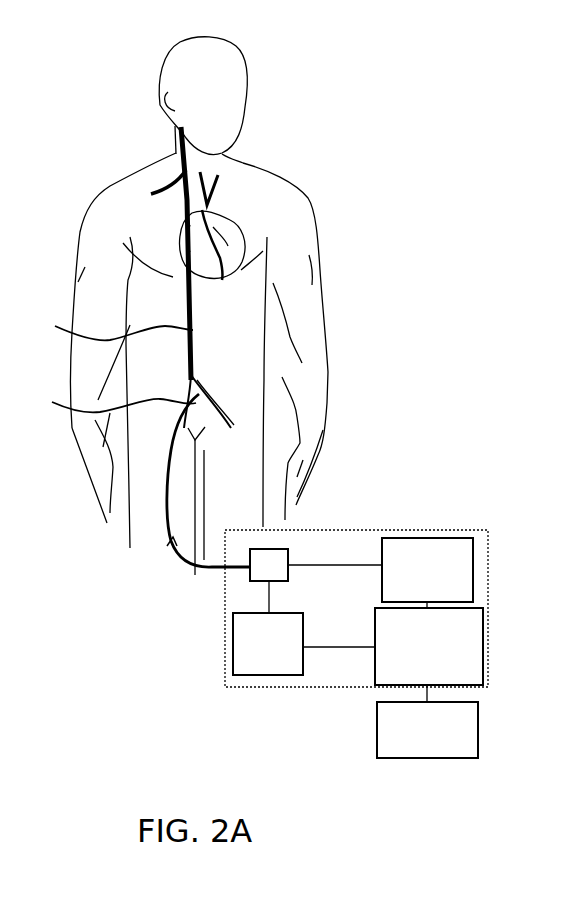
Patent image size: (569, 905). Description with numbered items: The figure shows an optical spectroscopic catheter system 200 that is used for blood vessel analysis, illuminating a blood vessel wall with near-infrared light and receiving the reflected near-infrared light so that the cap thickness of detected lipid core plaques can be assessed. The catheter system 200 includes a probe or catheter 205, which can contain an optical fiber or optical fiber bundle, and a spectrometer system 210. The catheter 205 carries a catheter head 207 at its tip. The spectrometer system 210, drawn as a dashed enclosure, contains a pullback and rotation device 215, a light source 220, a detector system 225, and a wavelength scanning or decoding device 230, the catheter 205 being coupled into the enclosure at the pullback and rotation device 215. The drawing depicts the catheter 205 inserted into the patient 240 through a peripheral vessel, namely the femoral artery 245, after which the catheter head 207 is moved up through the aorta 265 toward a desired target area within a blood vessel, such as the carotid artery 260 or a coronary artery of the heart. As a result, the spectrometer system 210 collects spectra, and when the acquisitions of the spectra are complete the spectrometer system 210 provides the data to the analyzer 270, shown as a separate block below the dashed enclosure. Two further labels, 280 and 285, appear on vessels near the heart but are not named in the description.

The optical spectroscopic catheter system 200 is at (328, 488).
The catheter 205 is at (187, 567).
The catheter head 207 is at (222, 280).
The spectrometer system 210 is at (357, 525).
The pullback and rotation device 215 is at (288, 579).
The light source 220 is at (427, 570).
The detector system 225 is at (268, 644).
The wavelength scanning or decoding device 230 is at (429, 646).
The patient 240 is at (328, 403).
The femoral artery 245 is at (114, 396).
The carotid artery 260 is at (184, 163).
The aorta 265 is at (114, 324).
The analyzer 270 is at (427, 730).
The pulmonary vessel 280 is at (219, 210).
The heart vessel 285 is at (235, 247).